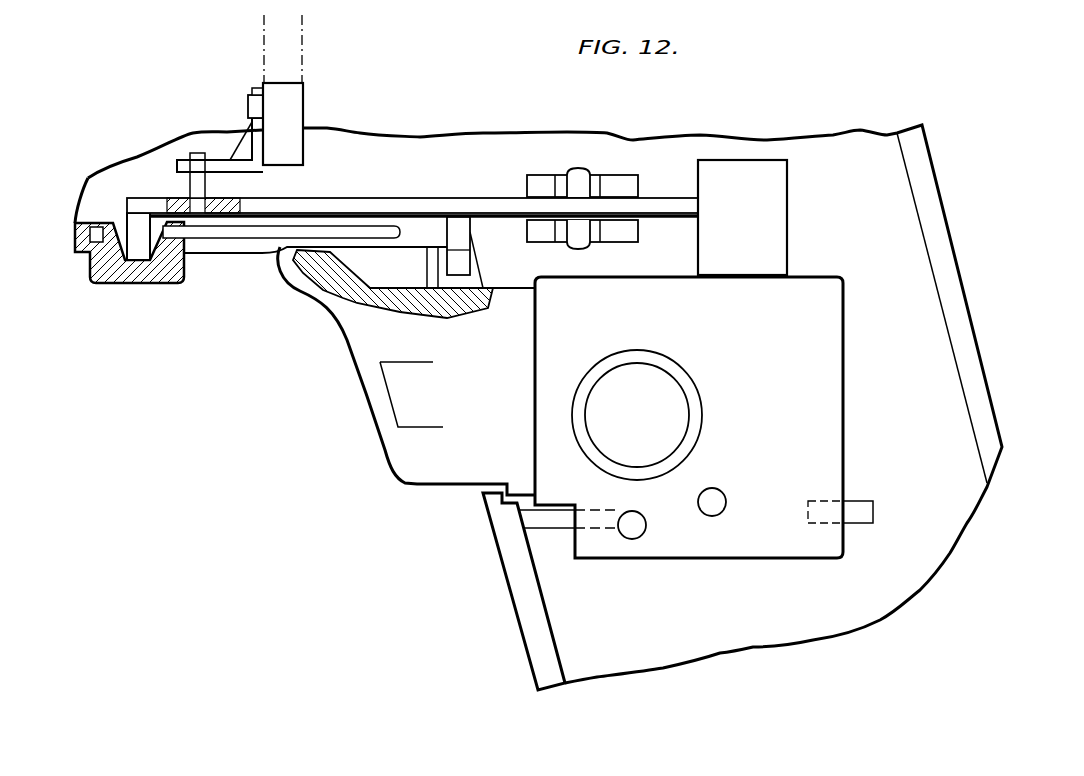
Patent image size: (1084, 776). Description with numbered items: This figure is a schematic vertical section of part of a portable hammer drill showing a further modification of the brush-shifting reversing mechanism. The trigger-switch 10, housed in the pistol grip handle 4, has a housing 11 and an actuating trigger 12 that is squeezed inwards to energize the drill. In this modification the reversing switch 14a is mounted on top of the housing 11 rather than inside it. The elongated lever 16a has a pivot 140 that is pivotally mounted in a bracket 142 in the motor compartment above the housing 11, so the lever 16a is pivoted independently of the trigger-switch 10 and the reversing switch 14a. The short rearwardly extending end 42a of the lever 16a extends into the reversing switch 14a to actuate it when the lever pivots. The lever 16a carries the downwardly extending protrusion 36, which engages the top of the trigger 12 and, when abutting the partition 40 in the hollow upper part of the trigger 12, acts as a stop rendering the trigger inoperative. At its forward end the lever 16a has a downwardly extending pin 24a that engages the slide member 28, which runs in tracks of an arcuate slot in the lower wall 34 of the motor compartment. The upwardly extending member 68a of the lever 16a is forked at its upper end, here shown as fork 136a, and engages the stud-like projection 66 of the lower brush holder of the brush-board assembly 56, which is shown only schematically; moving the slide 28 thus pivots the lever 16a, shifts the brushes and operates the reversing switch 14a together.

The pistol grip handle 4 is at (500, 590).
The trigger-switch 10 is at (818, 386).
The housing 11 is at (845, 445).
The actuating trigger 12 is at (390, 460).
The reversing switch 14a is at (783, 187).
The elongated lever 16a is at (309, 206).
The pin 24a is at (132, 228).
The slide member 28 is at (149, 285).
The lower wall 34 is at (250, 240).
The protrusion 36 is at (471, 234).
The partition 40 is at (382, 272).
The short rearwardly extending end 42a is at (638, 208).
The brush-board assembly 56 is at (310, 59).
The stud-like projection 66 is at (248, 108).
The upwardly extending member 68a is at (207, 184).
The cap 136a is at (253, 88).
The pivot 140 is at (570, 173).
The bracket 142 is at (596, 178).